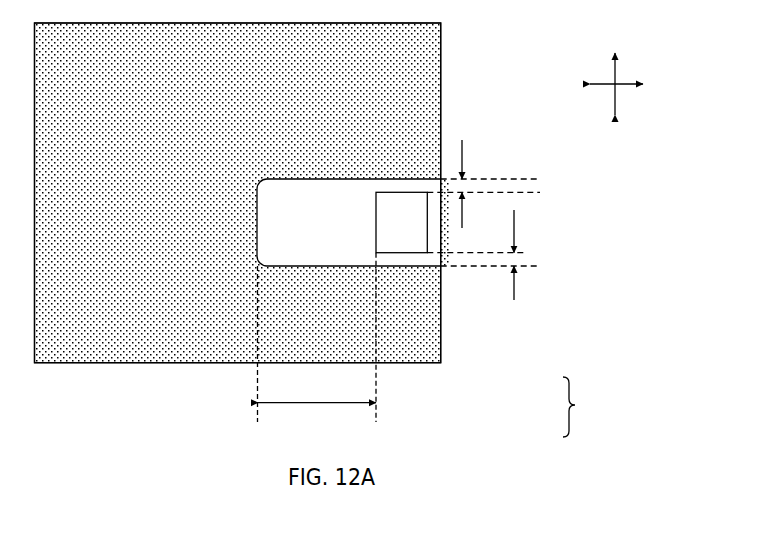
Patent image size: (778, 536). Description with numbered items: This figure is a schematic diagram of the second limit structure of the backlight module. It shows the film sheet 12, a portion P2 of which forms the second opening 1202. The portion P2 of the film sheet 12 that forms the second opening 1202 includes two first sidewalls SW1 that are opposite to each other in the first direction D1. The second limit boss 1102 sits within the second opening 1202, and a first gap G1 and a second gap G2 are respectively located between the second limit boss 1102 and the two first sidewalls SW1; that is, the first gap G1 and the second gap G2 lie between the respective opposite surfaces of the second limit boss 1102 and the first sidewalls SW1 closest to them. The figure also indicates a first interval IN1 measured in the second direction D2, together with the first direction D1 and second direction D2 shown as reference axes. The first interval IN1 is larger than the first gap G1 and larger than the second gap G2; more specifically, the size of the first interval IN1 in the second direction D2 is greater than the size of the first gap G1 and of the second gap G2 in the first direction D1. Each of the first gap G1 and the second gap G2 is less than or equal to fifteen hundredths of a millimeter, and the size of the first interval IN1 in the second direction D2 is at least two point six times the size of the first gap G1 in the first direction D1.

The film sheet 12 is at (420, 49).
The portion of the film sheet P2 is at (357, 152).
The first sidewall SW1 is at (393, 178).
The second limit boss 1102 is at (405, 243).
The second opening 1202 is at (357, 258).
The first gap G1 is at (480, 184).
The second gap G2 is at (528, 255).
The first interval IN1 is at (317, 422).
The first direction D1 is at (613, 70).
The second direction D2 is at (631, 84).